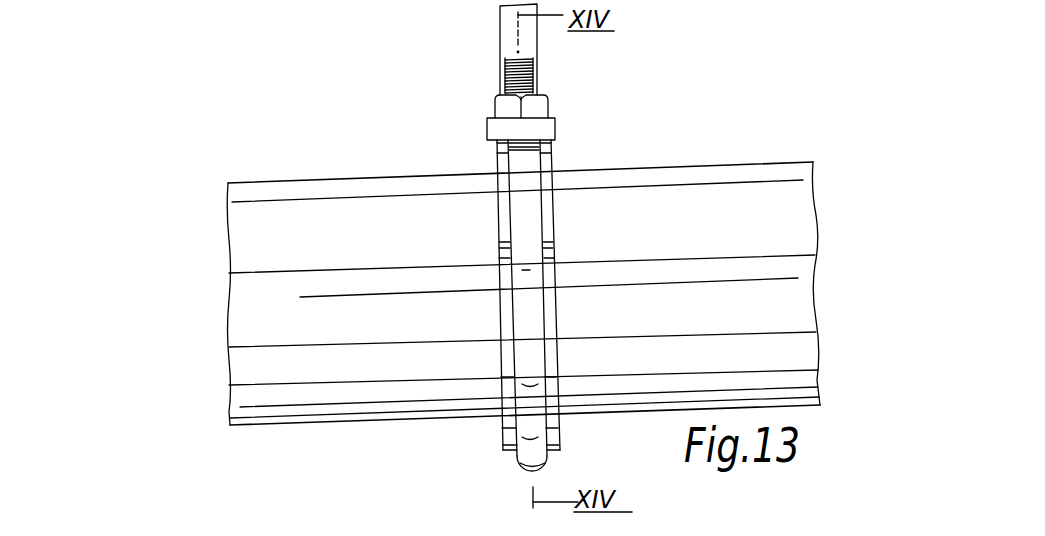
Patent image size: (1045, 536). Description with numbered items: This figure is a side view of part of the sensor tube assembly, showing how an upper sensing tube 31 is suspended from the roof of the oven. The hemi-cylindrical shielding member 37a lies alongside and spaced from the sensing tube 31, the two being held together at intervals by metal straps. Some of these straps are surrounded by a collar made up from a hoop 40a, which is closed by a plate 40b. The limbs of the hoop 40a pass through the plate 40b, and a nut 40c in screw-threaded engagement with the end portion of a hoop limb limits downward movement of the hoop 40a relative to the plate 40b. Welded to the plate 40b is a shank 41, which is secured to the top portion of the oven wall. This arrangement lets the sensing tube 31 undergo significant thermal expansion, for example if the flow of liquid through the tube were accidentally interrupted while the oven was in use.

The sensing tube 31 is at (246, 235).
The shielding member 37a is at (250, 335).
The hoop 40a is at (520, 176).
The plate 40b is at (554, 128).
The nut 40c is at (498, 106).
The shank 41 is at (507, 28).